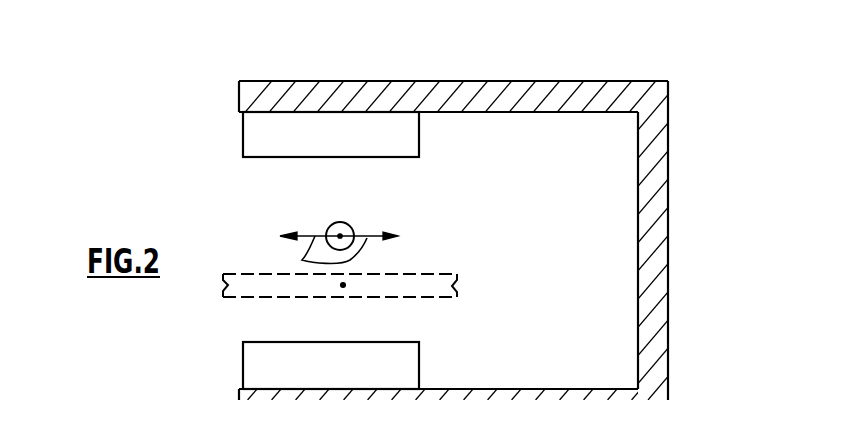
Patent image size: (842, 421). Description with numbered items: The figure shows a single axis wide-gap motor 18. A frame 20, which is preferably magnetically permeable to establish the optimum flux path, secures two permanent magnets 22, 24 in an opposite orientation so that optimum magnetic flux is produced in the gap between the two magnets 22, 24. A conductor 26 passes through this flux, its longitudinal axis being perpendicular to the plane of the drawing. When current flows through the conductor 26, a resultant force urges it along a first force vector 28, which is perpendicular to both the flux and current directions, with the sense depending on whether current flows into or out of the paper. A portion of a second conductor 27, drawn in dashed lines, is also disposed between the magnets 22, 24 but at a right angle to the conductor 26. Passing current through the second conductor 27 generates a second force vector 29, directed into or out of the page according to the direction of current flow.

The single axis wide-gap motor 18 is at (631, 65).
The frame 20 is at (660, 152).
The permanent magnet 22 is at (252, 128).
The permanent magnet 24 is at (252, 366).
The conductor 26 is at (335, 222).
The first force vector 28 is at (302, 260).
The second conductor 27 is at (247, 299).
The second force vector 29 is at (343, 289).